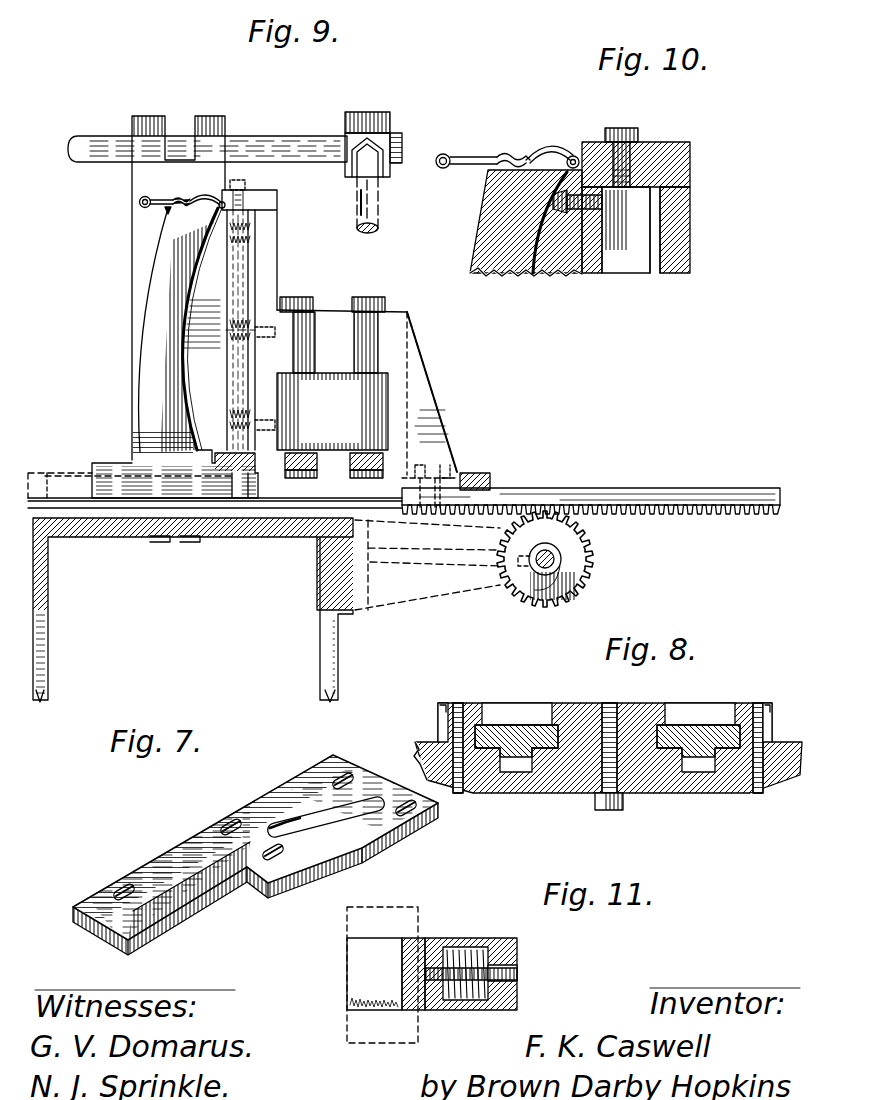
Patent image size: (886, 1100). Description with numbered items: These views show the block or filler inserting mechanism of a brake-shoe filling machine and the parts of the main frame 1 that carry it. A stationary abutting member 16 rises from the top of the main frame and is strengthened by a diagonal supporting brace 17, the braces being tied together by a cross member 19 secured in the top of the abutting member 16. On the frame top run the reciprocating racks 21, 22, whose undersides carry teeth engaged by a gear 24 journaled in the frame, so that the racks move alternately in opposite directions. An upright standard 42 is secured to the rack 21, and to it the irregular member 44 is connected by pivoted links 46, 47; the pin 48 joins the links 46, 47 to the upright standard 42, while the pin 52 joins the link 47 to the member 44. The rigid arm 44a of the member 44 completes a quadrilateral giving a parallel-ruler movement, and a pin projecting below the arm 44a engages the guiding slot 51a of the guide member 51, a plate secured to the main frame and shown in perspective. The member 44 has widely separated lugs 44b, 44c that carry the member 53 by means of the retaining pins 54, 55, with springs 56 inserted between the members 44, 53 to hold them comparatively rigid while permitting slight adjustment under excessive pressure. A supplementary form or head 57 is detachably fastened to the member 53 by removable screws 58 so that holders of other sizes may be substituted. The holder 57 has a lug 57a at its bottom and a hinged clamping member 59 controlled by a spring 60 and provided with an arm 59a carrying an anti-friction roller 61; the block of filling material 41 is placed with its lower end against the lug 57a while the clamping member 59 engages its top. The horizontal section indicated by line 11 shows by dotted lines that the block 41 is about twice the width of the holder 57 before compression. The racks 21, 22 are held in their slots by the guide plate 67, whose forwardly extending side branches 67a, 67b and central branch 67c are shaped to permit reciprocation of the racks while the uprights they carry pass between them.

In FIG. 9, the frame 1 is at (320, 592).
In FIG. 8, the frame 1 is at (650, 795).
In FIG. 9, the section line 11 is at (117, 223).
In FIG. 9, the stationary abutting member 16 is at (140, 181).
In FIG. 9, the diagonal supporting brace 17 is at (373, 205).
In FIG. 9, the cross member 19 is at (291, 138).
In FIG. 9, the reciprocating rack 21 is at (586, 492).
In FIG. 8, the reciprocating rack 21 is at (518, 760).
In FIG. 8, the reciprocating rack 22 is at (699, 762).
In FIG. 9, the gear 24 is at (590, 578).
In FIG. 9, the block of filling material 41 is at (150, 265).
In FIG. 10, the block of filling material 41 is at (488, 222).
In FIG. 11, the block of filling material 41 is at (372, 1037).
In FIG. 9, the upright standard 42 is at (432, 410).
In FIG. 9, the irregular member 44 is at (268, 268).
In FIG. 10, the irregular member 44 is at (676, 205).
In FIG. 11, the irregular member 44 is at (498, 950).
In FIG. 9, the rigid arm 44a is at (294, 470).
In FIG. 9, the lug 44b is at (253, 198).
In FIG. 10, the lug 44b is at (658, 145).
In FIG. 9, the lug 44c is at (232, 470).
In FIG. 9, the pivoted link 46 is at (385, 462).
In FIG. 9, the pivoted link 47 is at (332, 411).
In FIG. 9, the pin 48 is at (370, 306).
In FIG. 7, the guide member 51 is at (298, 790).
In FIG. 7, the guiding slot 51a is at (208, 864).
In FIG. 9, the pin 52 is at (312, 306).
In FIG. 9, the member 53 is at (242, 263).
In FIG. 10, the member 53 is at (626, 230).
In FIG. 11, the member 53 is at (450, 1012).
In FIG. 9, the retaining pin 54 is at (242, 196).
In FIG. 10, the retaining pin 54 is at (624, 130).
In FIG. 9, the retaining pin 55 is at (242, 325).
In FIG. 9, the spring 56 is at (230, 247).
In FIG. 11, the spring 56 is at (466, 1002).
In FIG. 9, the supplementary form or head 57 is at (198, 262).
In FIG. 10, the supplementary form or head 57 is at (567, 275).
In FIG. 11, the supplementary form or head 57 is at (417, 1012).
In FIG. 9, the lug 57a is at (207, 447).
In FIG. 10, the removable screw 58 is at (590, 273).
In FIG. 9, the hinged clamping member 59 is at (203, 192).
In FIG. 10, the hinged clamping member 59 is at (507, 152).
In FIG. 9, the arm 59a is at (165, 209).
In FIG. 10, the arm 59a is at (475, 156).
In FIG. 9, the spring 60 is at (222, 203).
In FIG. 10, the spring 60 is at (548, 150).
In FIG. 9, the anti-friction roller 61 is at (139, 202).
In FIG. 10, the anti-friction roller 61 is at (442, 153).
In FIG. 9, the guide plate 67 is at (470, 478).
In FIG. 8, the side branch 67a is at (768, 706).
In FIG. 8, the side branch 67b is at (485, 708).
In FIG. 8, the central branch 67c is at (640, 712).